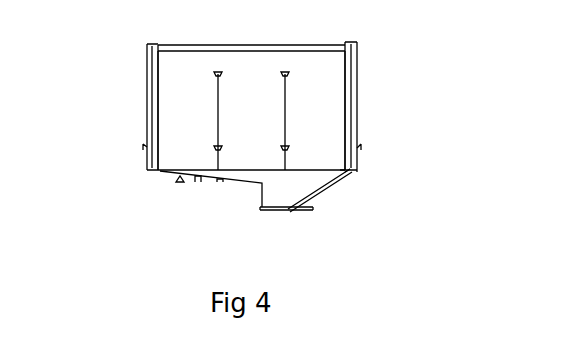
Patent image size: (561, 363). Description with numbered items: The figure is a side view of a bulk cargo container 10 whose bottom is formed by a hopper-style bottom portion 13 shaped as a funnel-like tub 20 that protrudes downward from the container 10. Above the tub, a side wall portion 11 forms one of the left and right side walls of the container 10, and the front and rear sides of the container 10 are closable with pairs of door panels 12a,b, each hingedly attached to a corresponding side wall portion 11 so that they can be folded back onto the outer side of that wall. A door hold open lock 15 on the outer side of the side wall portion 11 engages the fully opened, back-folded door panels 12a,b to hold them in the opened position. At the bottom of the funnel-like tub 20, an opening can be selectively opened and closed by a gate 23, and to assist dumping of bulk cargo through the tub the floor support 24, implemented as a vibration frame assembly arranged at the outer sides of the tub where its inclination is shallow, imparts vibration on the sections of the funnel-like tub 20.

The container 10 is at (370, 83).
The side wall portion 11 is at (250, 95).
The door panels 12a,b is at (131, 83).
The bottom portion 13 is at (349, 186).
The door hold open lock 15 is at (217, 127).
The funnel-like tub 20 is at (310, 187).
The gate 23 is at (275, 210).
The floor support 24 is at (205, 182).